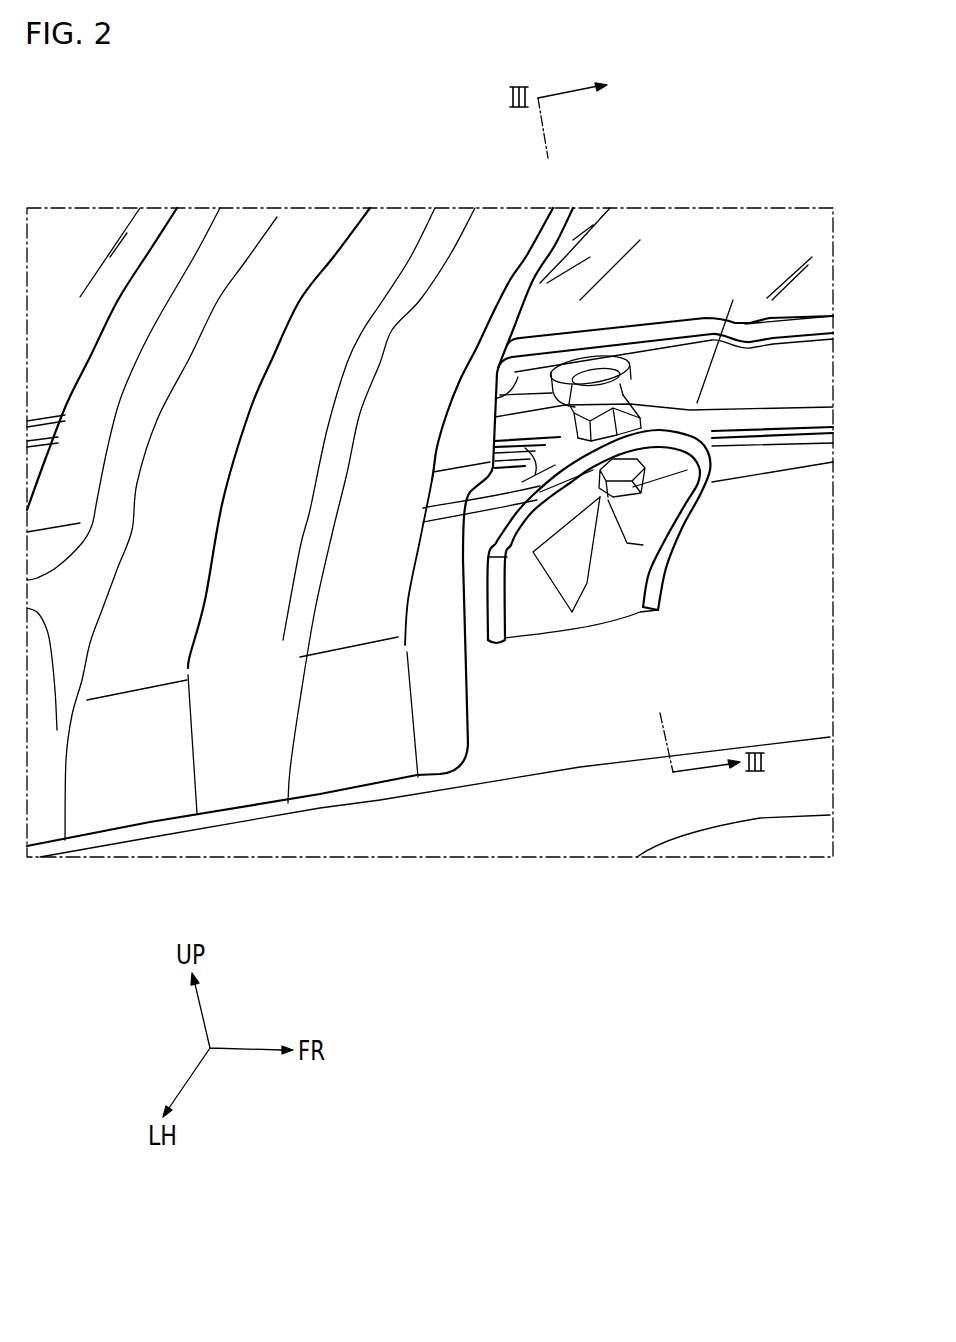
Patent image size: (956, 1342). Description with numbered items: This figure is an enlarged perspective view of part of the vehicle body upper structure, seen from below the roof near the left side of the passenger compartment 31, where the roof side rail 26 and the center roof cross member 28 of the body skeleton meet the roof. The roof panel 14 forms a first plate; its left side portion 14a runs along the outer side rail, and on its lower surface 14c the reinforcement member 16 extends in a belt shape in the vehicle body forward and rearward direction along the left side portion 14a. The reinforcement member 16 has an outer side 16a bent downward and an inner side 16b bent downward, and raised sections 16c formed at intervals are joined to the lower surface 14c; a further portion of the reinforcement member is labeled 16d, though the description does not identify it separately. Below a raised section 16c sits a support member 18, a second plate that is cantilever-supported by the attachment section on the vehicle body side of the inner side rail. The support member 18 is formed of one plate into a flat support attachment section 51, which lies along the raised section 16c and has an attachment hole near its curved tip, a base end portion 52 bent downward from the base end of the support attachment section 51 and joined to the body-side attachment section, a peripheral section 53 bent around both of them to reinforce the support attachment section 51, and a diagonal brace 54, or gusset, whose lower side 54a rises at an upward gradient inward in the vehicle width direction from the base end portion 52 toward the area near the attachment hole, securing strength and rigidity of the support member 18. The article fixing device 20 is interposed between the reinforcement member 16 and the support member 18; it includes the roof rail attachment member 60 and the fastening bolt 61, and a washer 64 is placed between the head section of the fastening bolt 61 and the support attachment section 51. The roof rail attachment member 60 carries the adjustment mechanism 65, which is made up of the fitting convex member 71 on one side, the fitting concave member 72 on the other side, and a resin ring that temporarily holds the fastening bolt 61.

The roof panel 14 is at (608, 238).
The left side portion 14a is at (423, 508).
The lower surface 14c is at (651, 236).
The reinforcement member 16 is at (786, 386).
The outer side 16a is at (770, 418).
The inner side 16b is at (792, 320).
The raised sections 16c is at (627, 332).
The rail ear portion 16d is at (497, 398).
The support member 18 is at (480, 605).
The article fixing device 20 is at (656, 351).
The roof side rail 26 is at (523, 753).
The center roof cross member 28 is at (376, 233).
The passenger compartment 31 is at (623, 832).
The support attachment section 51 is at (650, 540).
The base end portion 52 is at (533, 637).
The peripheral section 53 is at (503, 548).
The diagonal brace 54 is at (600, 576).
The lower side 54a is at (588, 590).
The roof rail attachment member 60 is at (659, 387).
The fastening bolt 61 is at (638, 513).
The washer 64 is at (500, 524).
The adjustment mechanism 65 is at (569, 348).
The fitting convex member 71 is at (502, 408).
The fitting concave member 72 is at (672, 404).